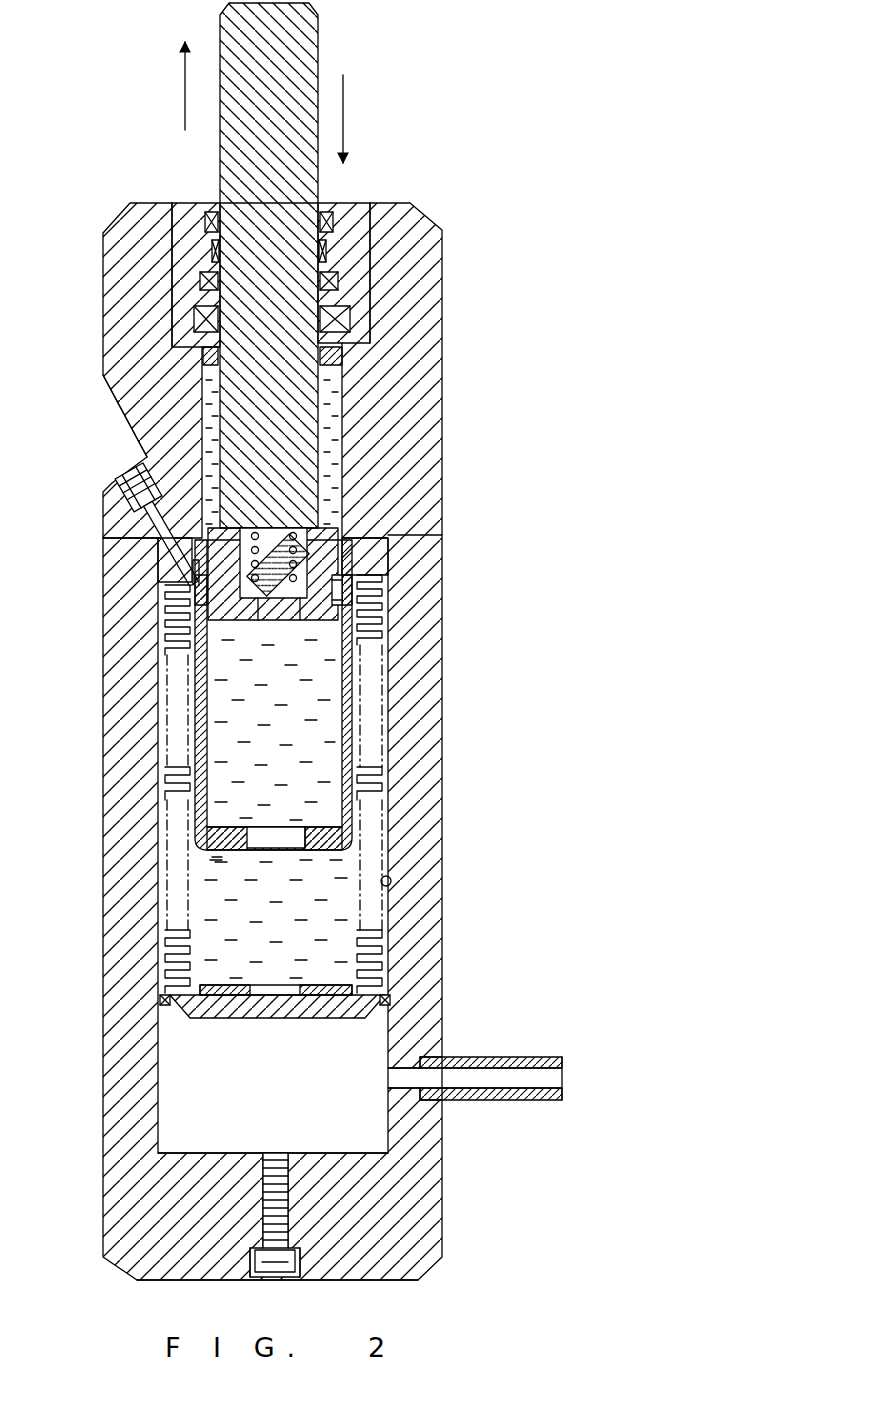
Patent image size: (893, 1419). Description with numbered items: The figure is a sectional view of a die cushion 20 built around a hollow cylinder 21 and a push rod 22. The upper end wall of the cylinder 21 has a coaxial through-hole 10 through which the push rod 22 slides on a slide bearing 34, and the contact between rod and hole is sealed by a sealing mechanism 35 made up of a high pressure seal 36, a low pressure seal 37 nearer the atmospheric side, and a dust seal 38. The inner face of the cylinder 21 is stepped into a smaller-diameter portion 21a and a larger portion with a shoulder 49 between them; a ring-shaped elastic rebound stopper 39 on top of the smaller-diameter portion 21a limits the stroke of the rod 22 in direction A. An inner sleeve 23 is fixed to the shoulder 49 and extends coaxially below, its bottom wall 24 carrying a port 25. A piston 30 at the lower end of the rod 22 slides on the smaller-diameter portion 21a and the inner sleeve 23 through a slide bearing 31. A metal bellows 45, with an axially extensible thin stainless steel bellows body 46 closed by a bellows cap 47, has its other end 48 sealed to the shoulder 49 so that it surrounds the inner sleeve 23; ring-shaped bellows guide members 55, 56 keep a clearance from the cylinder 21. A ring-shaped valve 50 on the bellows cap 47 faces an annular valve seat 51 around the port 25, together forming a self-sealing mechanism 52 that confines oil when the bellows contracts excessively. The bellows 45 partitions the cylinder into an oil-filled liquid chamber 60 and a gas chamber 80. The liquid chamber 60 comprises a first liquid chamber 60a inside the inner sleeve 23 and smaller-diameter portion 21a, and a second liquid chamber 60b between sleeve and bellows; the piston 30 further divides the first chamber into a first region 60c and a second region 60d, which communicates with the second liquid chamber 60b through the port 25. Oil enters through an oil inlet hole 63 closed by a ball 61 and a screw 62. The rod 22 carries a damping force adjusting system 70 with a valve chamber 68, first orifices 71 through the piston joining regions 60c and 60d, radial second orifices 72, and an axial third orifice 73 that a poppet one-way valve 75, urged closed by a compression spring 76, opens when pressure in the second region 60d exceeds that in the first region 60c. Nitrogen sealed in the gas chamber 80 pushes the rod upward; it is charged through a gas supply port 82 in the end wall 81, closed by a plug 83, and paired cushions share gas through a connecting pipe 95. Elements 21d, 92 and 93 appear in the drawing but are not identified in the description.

The through-hole 10 is at (222, 210).
The die cushion 20 is at (556, 200).
The hollow cylinder 21 is at (104, 968).
The smaller-diameter portion 21a is at (207, 400).
The housing port 21d is at (392, 880).
The push rod 22 is at (300, 35).
The inner sleeve 23 is at (350, 700).
The bottom wall 24 is at (345, 840).
The port 25 is at (268, 848).
The piston 30 is at (345, 585).
The slide bearing 31 is at (340, 600).
The slide bearing 34 is at (334, 246).
The sealing mechanism 35 is at (192, 291).
The high pressure seal 36 is at (350, 320).
The low pressure seal 37 is at (340, 282).
The dust seal 38 is at (338, 216).
The rebound stopper 39 is at (342, 352).
The metal bellows 45 is at (165, 683).
The bellows body 46 is at (168, 960).
The bellows cap 47 is at (335, 1020).
The other end 48 is at (172, 600).
The shoulder 49 is at (160, 583).
The ring-shaped valve 50 is at (322, 985).
The annular valve seat 51 is at (322, 850).
The self-sealing mechanism 52 is at (212, 857).
The bellows guide member 55 is at (178, 790).
The bellows guide member 56 is at (172, 1002).
The liquid chamber 60 is at (205, 928).
The first liquid chamber 60a is at (340, 430).
The second liquid chamber 60b is at (200, 895).
The first region 60c is at (340, 460).
The second region 60d is at (330, 748).
The ball 61 is at (120, 512).
The screw 62 is at (110, 486).
The oil inlet hole 63 is at (135, 540).
The valve chamber 68 is at (205, 470).
The damping force adjusting system 70 is at (388, 560).
The first orifices 71 is at (306, 620).
The second orifices 72 is at (305, 555).
The third orifice 73 is at (265, 650).
The one-way valve 75 is at (242, 620).
The compression spring 76 is at (300, 537).
The gas chamber 80 is at (175, 1095).
The end wall 81 is at (165, 1272).
The gas supply port 82 is at (275, 1153).
The plug 83 is at (268, 1272).
The return spring 92 is at (375, 636).
The screw recess 93 is at (300, 1250).
The connecting pipe 95 is at (520, 1057).